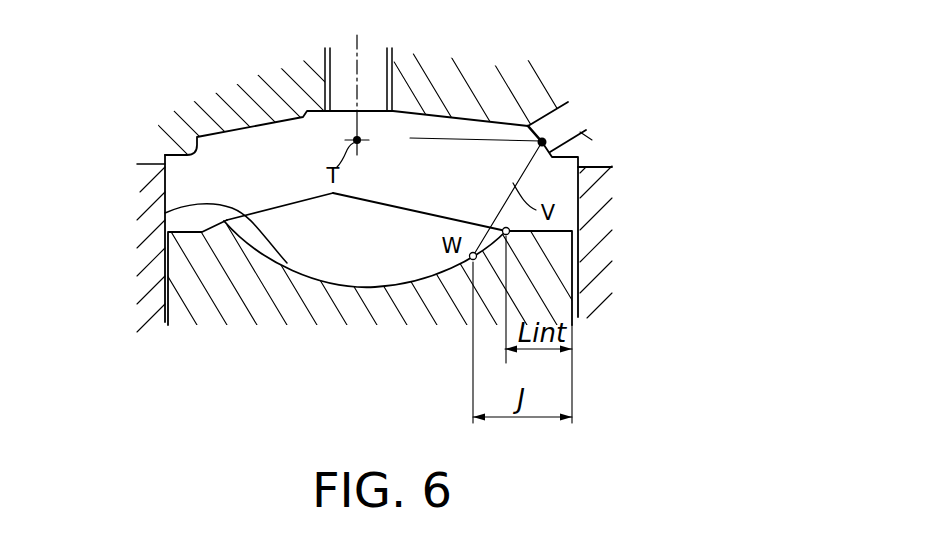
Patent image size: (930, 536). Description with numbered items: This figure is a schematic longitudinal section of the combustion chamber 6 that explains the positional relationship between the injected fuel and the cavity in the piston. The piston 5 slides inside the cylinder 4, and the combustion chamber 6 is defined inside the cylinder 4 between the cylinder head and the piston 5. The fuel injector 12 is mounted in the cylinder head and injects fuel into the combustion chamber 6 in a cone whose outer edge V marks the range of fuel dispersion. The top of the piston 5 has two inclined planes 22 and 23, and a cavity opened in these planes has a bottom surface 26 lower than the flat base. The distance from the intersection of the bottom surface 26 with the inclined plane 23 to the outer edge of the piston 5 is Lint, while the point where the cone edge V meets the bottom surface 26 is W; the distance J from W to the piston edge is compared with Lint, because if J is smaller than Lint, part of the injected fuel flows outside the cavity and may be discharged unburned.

The cylinder 4 is at (578, 218).
The piston 5 is at (193, 268).
The combustion chamber 6 is at (214, 185).
The fuel injector 12 is at (570, 122).
The inclined plane 22 is at (297, 202).
The inclined plane 23 is at (400, 208).
The bottom surface 26 is at (165, 213).